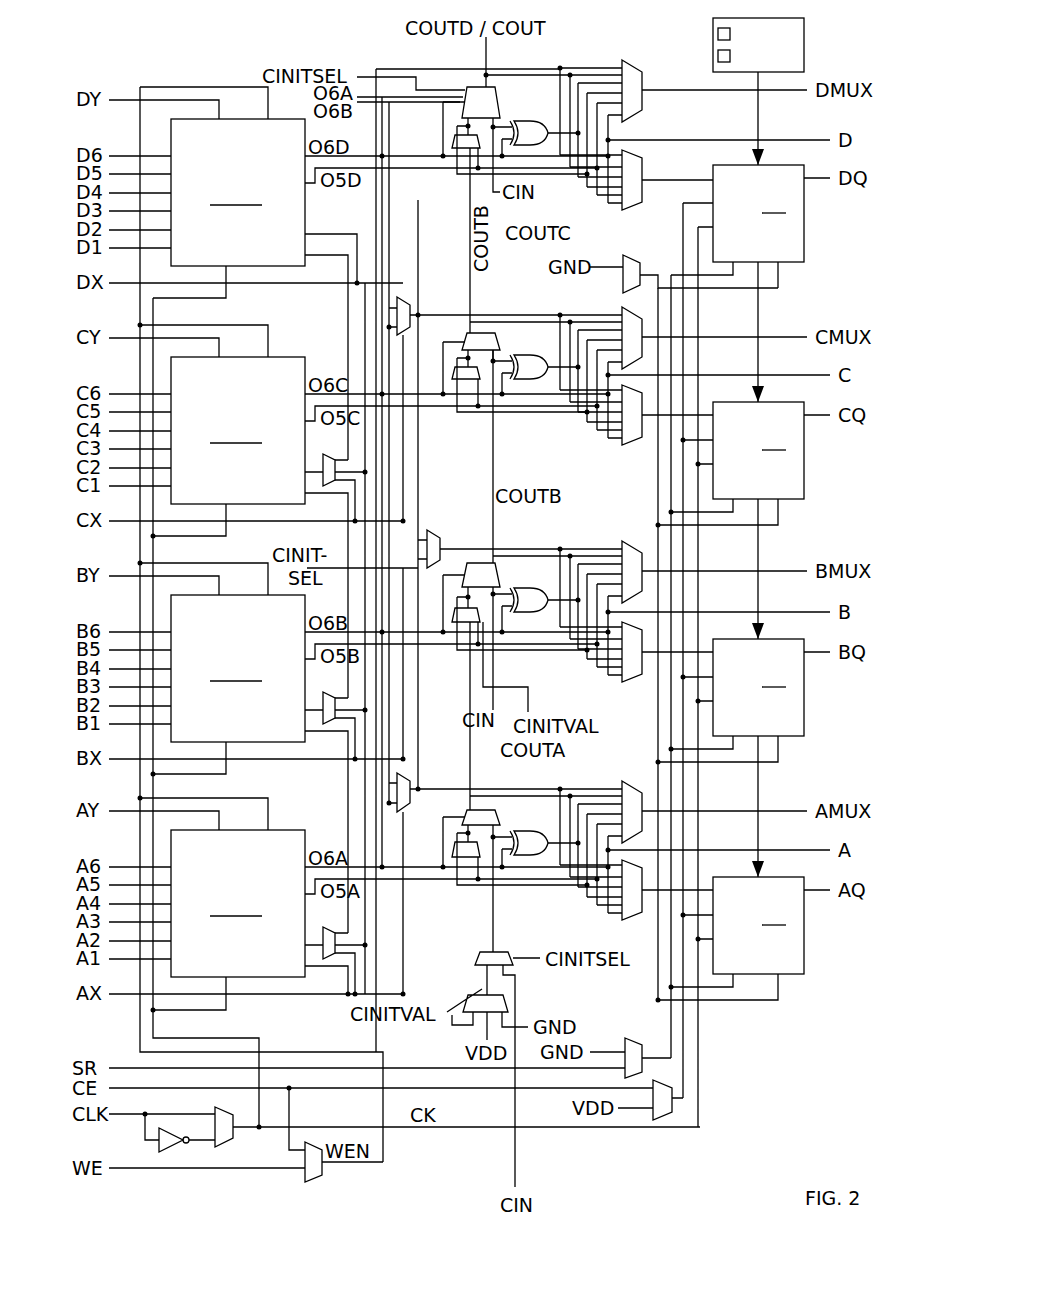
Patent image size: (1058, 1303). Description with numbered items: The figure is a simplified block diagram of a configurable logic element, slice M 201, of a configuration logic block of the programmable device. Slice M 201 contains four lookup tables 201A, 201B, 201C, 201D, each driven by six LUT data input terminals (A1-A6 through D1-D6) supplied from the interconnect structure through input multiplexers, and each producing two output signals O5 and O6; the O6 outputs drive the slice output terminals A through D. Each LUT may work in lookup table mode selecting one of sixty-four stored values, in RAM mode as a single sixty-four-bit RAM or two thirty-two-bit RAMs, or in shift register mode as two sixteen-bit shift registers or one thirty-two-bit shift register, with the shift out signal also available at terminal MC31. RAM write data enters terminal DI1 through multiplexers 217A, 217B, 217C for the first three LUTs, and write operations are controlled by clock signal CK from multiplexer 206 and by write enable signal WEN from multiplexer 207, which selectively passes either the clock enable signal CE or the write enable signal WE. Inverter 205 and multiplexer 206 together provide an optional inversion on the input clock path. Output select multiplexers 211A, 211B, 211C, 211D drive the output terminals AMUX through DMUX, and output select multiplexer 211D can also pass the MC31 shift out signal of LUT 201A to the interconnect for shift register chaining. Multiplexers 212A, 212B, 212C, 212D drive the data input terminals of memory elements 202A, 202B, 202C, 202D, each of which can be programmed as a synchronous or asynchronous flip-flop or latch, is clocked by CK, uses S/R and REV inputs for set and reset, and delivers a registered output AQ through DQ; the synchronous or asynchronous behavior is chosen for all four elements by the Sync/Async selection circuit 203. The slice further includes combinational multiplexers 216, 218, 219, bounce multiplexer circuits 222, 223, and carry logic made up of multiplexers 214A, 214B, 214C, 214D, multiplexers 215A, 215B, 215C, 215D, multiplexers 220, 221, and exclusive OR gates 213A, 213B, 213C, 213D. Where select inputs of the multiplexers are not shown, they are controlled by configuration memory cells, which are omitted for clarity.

The slice M 201 is at (216, 74).
The lookup table (LUTM) 201A is at (258, 944).
The lookup table (LUTM) 201B is at (258, 709).
The lookup table (LUTM) 201C is at (258, 471).
The lookup table (LUTM) 201D is at (258, 233).
The memory element 202A is at (797, 949).
The memory element 202B is at (797, 711).
The memory element 202C is at (797, 474).
The memory element 202D is at (797, 237).
The sync/async select 203 is at (713, 58).
The inverter 205 is at (167, 1153).
The multiplexer 206 is at (233, 1143).
The multiplexer 207 is at (310, 1180).
The output select multiplexer 211A is at (621, 784).
The output select multiplexer 211B is at (621, 544).
The output select multiplexer 211C is at (621, 310).
The output select multiplexer 211D is at (643, 98).
The multiplexer 212A is at (637, 921).
The multiplexer 212B is at (637, 683).
The multiplexer 212C is at (637, 446).
The multiplexer 212D is at (643, 177).
The exclusive OR gate 213A is at (530, 824).
The exclusive OR gate 213B is at (530, 580).
The exclusive OR gate 213C is at (530, 348).
The exclusive OR gate 213D is at (530, 113).
The multiplexer 214A is at (468, 811).
The multiplexer 214B is at (468, 564).
The multiplexer 214C is at (468, 334).
The multiplexer 214D is at (497, 89).
The multiplexer 215A is at (478, 858).
The multiplexer 215B is at (478, 623).
The multiplexer 215C is at (478, 380).
The multiplexer 215D is at (458, 150).
The combinational multiplexer 216 is at (403, 298).
The multiplexer 217A is at (328, 960).
The multiplexer 217B is at (328, 725).
The multiplexer 217C is at (328, 487).
The combinational multiplexer 218 is at (427, 532).
The combinational multiplexer 219 is at (407, 812).
The multiplexer 220 is at (507, 1000).
The multiplexer 221 is at (624, 256).
The bounce multiplexer circuit 222 is at (626, 1040).
The bounce multiplexer circuit 223 is at (661, 1122).